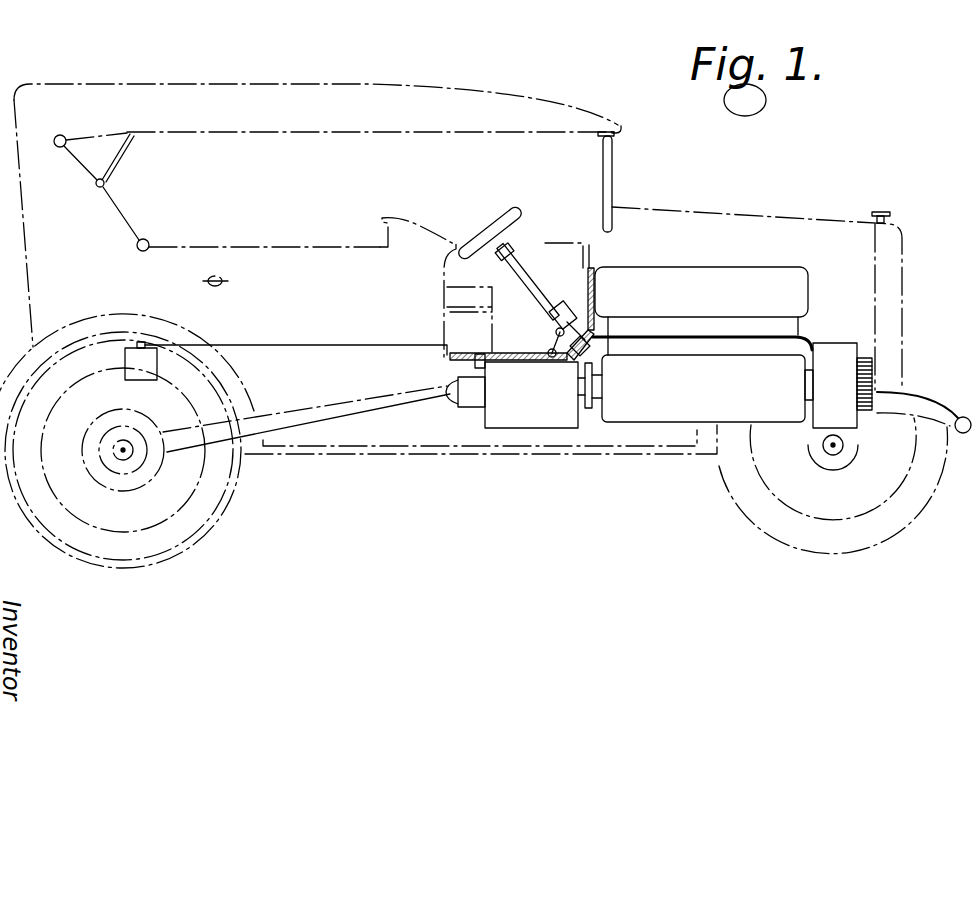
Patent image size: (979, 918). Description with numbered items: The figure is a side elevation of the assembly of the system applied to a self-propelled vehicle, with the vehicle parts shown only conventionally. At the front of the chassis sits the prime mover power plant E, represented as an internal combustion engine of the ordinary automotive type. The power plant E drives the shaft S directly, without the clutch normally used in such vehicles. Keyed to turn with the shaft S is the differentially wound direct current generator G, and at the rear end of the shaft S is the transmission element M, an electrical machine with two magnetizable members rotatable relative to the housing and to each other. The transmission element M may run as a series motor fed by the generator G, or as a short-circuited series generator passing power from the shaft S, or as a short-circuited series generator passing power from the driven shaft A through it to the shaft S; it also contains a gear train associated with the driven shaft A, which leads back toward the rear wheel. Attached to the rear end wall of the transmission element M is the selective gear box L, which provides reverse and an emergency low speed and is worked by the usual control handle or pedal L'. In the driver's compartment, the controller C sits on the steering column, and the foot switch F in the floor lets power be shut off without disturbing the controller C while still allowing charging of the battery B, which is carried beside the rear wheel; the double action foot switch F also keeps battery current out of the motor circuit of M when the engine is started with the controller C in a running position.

The battery B is at (125, 357).
The driven shaft A is at (396, 406).
The selective gear box L is at (457, 403).
The transmission element M is at (500, 424).
The shaft S is at (603, 448).
The controller C is at (561, 294).
The control handle or pedal L' is at (598, 295).
The foot switch F is at (578, 320).
The prime mover power plant E is at (772, 250).
The differentially wound direct current generator G is at (840, 360).